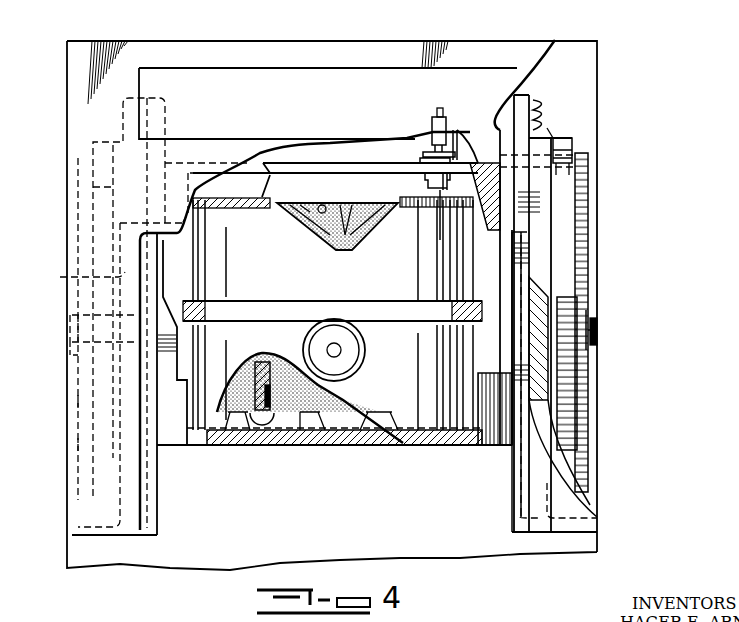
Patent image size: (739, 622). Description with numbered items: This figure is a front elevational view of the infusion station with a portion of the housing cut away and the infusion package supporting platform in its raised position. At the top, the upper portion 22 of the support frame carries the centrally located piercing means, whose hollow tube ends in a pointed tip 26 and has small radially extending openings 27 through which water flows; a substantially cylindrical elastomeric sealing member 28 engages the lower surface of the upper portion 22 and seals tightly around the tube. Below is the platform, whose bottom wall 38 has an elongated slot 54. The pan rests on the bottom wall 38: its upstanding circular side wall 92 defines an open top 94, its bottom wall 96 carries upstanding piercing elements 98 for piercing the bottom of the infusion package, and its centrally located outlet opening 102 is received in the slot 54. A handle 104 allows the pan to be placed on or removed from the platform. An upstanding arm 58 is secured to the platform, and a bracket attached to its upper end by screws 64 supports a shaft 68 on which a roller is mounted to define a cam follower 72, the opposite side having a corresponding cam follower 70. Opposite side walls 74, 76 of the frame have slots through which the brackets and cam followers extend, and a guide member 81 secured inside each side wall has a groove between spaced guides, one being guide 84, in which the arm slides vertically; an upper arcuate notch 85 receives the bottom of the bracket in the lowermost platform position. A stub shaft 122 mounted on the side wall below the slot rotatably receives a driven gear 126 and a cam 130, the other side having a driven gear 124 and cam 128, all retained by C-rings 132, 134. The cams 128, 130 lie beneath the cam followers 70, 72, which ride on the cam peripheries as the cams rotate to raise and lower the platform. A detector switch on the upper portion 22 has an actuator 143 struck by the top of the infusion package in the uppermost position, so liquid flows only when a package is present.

The upper portion 22 is at (474, 160).
The pointed tip 26 is at (315, 243).
The openings 27 is at (365, 228).
The elastomeric sealing member 28 is at (335, 169).
The bottom wall 38 is at (253, 447).
The elongated slot 54 is at (367, 443).
The upstanding arm 58 is at (512, 95).
The screws 64 is at (547, 125).
The shaft 68 is at (550, 137).
The cam follower 72 is at (575, 150).
The cam follower 70 is at (95, 135).
The side wall 74 is at (76, 276).
The side wall 76 is at (540, 295).
The guide member 81 is at (510, 486).
The guide 84 is at (538, 260).
The upper arcuate notch 85 is at (514, 263).
The circular side wall 92 is at (187, 345).
The open top 94 is at (270, 300).
The bottom wall 96 is at (315, 445).
The piercing elements 98 is at (260, 357).
The outlet opening 102 is at (335, 437).
The handle 104 is at (365, 360).
The stub shaft 122 is at (72, 320).
The driven gear 124 is at (78, 445).
The driven gear 126 is at (596, 220).
The cam 128 is at (78, 402).
The cam 130 is at (585, 426).
The C-ring 132 is at (67, 347).
The C-ring 134 is at (598, 345).
The actuator 143 is at (433, 222).